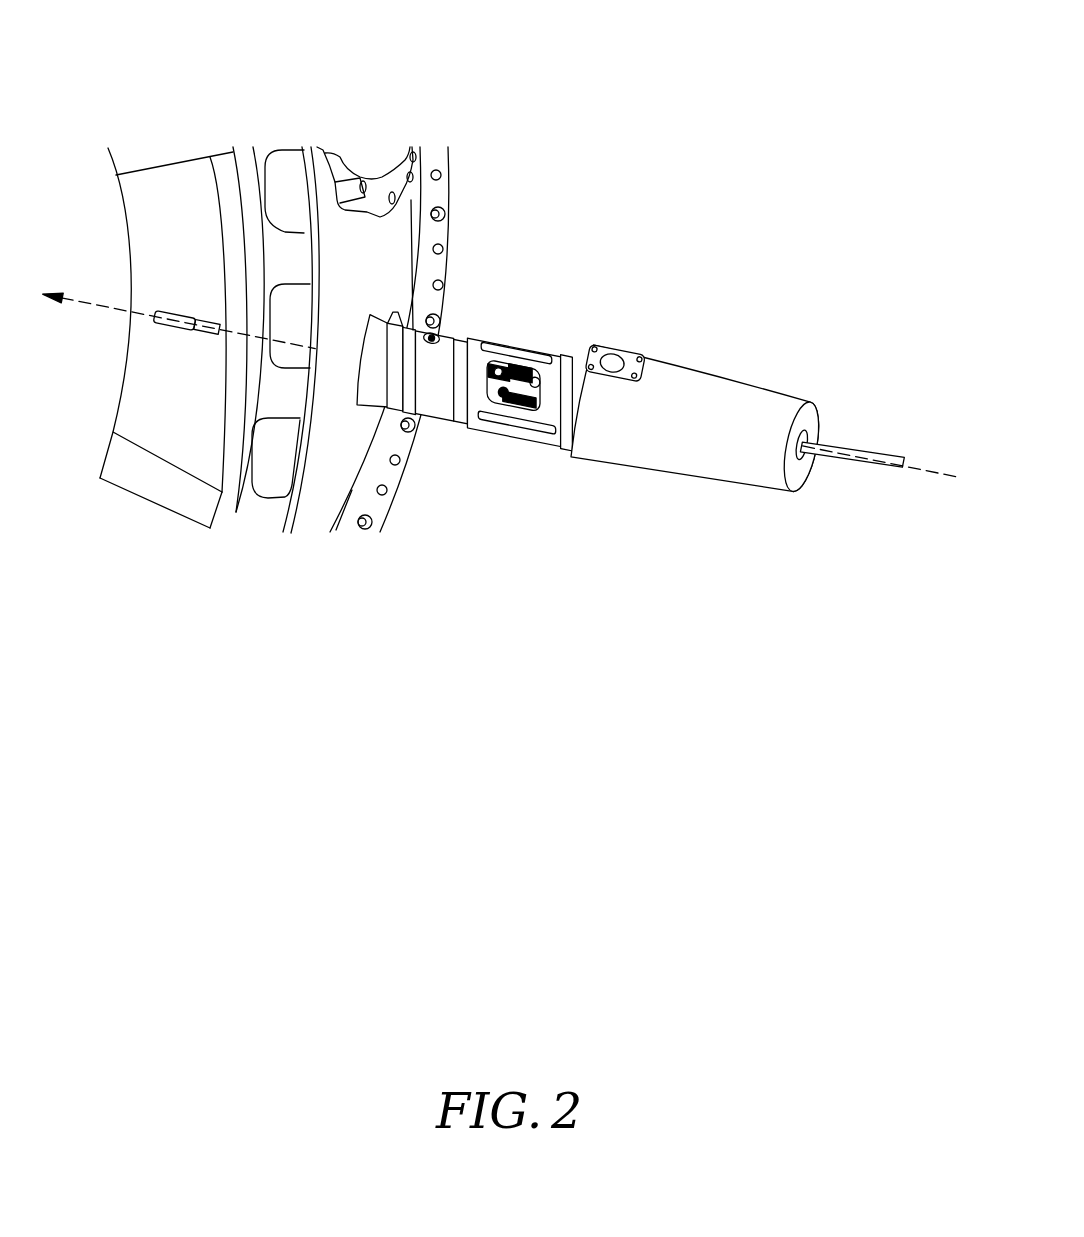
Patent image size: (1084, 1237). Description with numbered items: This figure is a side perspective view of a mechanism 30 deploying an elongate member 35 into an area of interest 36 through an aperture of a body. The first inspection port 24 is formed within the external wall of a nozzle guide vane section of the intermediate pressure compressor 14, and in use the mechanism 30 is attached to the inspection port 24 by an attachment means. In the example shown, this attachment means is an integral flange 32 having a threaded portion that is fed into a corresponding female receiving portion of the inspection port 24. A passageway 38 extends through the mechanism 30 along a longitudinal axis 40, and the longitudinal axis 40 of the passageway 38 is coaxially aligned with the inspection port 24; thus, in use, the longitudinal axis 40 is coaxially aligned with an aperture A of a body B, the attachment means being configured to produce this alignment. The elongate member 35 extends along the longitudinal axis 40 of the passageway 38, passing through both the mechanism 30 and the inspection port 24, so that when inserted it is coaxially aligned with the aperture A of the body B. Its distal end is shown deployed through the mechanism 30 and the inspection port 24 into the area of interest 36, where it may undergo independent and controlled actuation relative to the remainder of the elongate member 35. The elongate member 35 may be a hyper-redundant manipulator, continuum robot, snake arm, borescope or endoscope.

The intermediate pressure compressor 14 is at (140, 530).
The first inspection port 24 is at (370, 383).
The mechanism 30 is at (645, 300).
The integral flange 32 is at (421, 328).
The elongate member 35 is at (868, 458).
The area of interest 36 is at (190, 372).
The passageway 38 is at (818, 454).
The longitudinal axis 40 is at (923, 468).
The aperture A is at (383, 340).
The body B is at (302, 85).